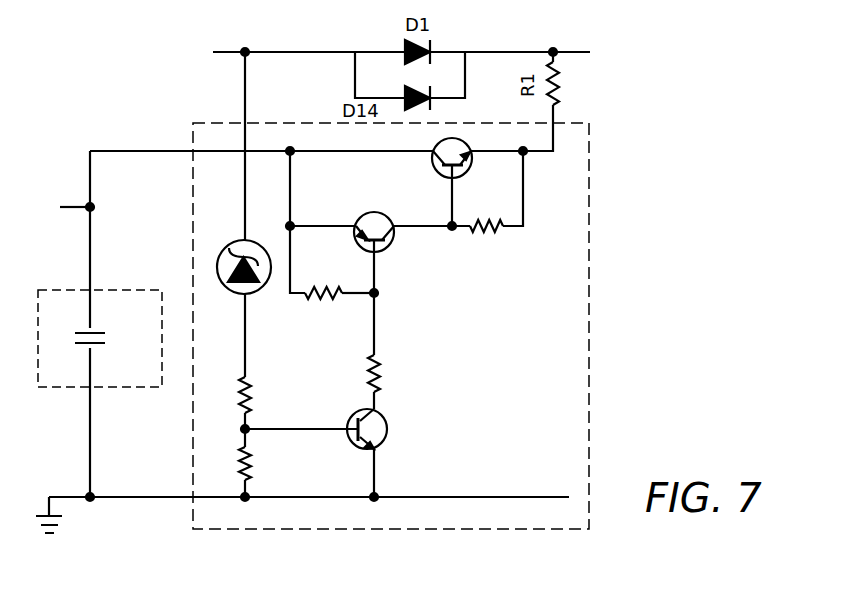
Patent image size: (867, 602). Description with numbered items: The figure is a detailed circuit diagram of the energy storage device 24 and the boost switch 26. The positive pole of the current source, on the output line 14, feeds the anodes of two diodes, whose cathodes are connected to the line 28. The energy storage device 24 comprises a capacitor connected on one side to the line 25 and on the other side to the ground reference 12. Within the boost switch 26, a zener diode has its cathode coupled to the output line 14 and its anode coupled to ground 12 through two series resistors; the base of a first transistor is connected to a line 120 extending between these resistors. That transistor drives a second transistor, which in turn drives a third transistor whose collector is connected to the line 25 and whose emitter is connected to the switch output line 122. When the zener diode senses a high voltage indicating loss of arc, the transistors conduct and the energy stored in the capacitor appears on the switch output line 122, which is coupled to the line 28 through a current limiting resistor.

The output line 14 is at (277, 52).
The line 28 is at (510, 52).
The switch output line 122 is at (553, 120).
The boost switch 26 is at (590, 222).
The line 25 is at (62, 208).
The energy storage device 24 is at (70, 387).
The ground reference 12 is at (63, 515).
The line 120 is at (250, 425).